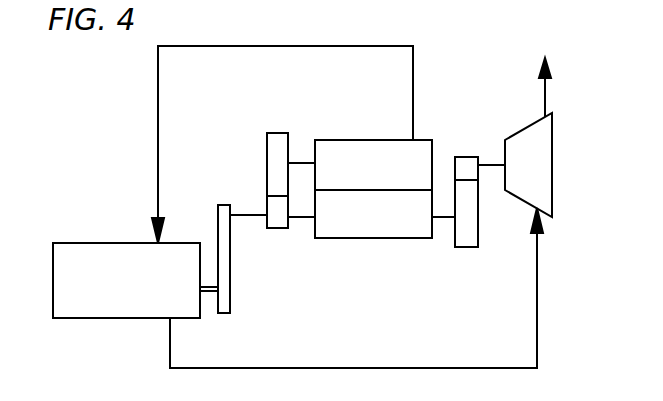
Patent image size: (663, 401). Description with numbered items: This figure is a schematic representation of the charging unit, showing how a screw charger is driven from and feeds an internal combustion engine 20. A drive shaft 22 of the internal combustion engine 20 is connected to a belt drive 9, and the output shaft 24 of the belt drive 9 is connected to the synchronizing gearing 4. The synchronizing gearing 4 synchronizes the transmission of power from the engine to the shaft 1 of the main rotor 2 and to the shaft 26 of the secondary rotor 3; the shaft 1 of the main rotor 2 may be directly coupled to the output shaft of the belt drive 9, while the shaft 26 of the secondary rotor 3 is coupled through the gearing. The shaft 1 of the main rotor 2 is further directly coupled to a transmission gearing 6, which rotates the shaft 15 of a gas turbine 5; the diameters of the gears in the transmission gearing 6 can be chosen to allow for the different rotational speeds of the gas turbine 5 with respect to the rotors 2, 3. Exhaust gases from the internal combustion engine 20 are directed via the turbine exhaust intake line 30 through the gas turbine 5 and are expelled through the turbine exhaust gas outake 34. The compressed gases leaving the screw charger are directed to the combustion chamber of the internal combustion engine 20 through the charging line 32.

The shaft of main rotor 1 is at (303, 218).
The main rotor 2 is at (343, 230).
The secondary rotor 3 is at (363, 158).
The synchronizing gearing 4 is at (275, 205).
The gas turbine 5 is at (527, 137).
The transmission gearing 6 is at (467, 168).
The belt drive 9 is at (225, 270).
The shaft of gas turbine 15 is at (493, 160).
The internal combustion engine 20 is at (107, 300).
The drive shaft 22 is at (205, 293).
The output shaft 24 is at (248, 217).
The shaft of secondary rotor 26 is at (305, 163).
The turbine exhaust intake line 30 is at (537, 317).
The charging line 32 is at (283, 46).
The turbine exhaust gas outake 34 is at (547, 93).